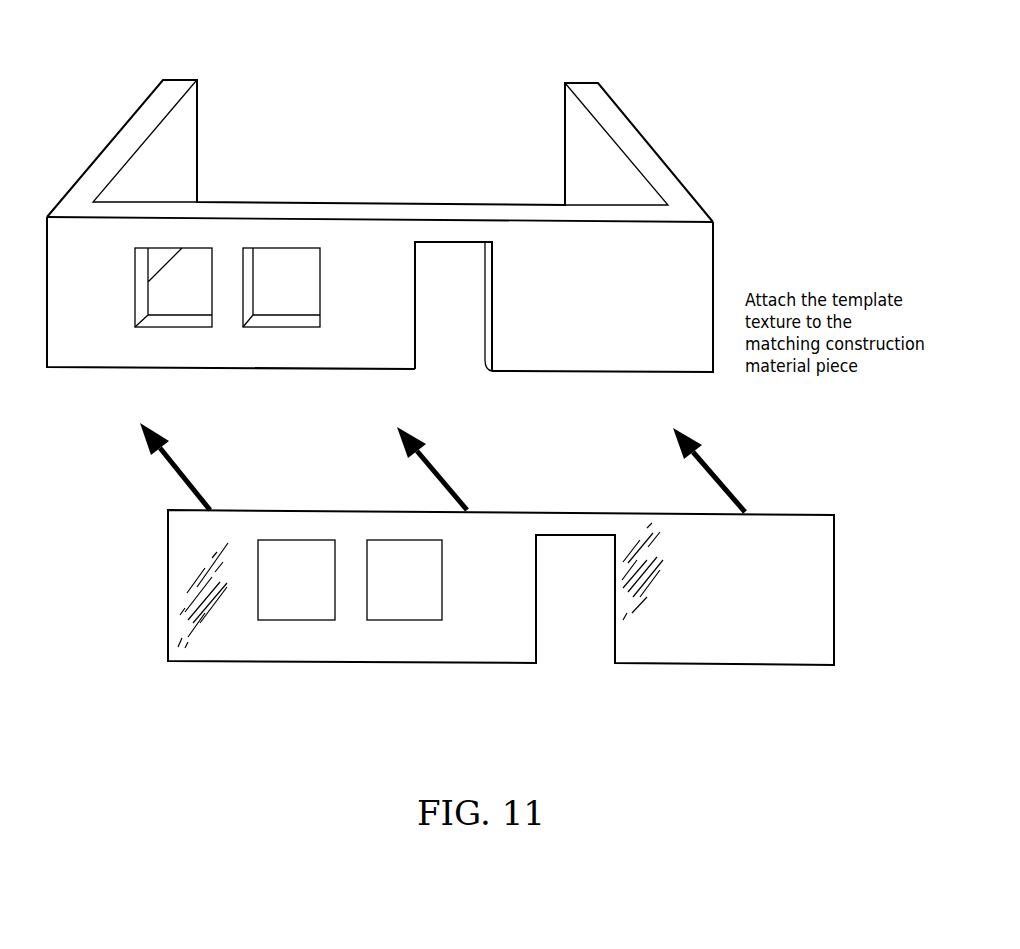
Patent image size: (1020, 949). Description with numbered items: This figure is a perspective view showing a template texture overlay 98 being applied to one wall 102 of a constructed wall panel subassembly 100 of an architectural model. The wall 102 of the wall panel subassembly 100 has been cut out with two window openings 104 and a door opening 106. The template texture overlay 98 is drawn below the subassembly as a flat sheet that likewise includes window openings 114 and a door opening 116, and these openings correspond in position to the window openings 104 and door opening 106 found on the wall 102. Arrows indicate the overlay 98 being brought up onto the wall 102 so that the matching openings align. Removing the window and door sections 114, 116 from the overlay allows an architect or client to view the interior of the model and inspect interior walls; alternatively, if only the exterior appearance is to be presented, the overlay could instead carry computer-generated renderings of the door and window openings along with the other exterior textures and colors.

The template texture overlay 98 is at (834, 593).
The wall panel subassembly 100 is at (380, 219).
The wall 102 is at (632, 301).
The window openings 104 is at (173, 295).
The door opening 106 is at (455, 337).
The window openings 114 is at (290, 587).
The door opening 116 is at (578, 633).